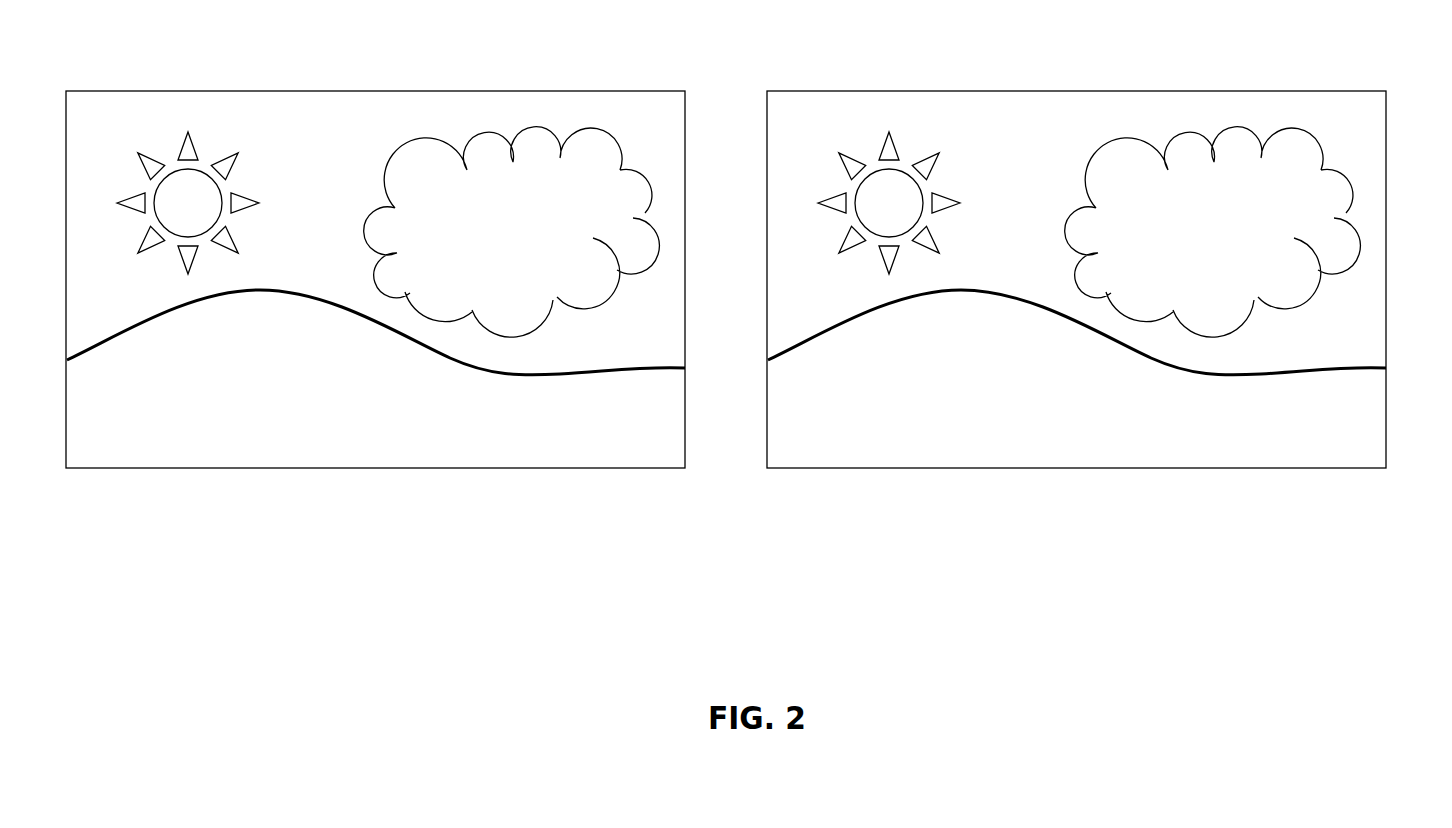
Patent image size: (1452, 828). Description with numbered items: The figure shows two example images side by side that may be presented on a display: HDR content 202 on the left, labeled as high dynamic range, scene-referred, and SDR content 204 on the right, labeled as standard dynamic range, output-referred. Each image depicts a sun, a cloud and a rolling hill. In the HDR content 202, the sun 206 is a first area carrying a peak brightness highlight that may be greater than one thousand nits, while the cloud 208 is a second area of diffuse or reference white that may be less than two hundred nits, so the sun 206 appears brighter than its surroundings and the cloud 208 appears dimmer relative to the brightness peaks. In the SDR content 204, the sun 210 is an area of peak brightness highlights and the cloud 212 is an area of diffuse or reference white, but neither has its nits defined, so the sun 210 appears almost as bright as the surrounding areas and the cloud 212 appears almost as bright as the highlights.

The HDR content 202 is at (420, 67).
The SDR content 204 is at (1133, 67).
The sun 206 is at (175, 165).
The cloud 208 is at (655, 245).
The sun 210 is at (875, 165).
The cloud 212 is at (1355, 238).